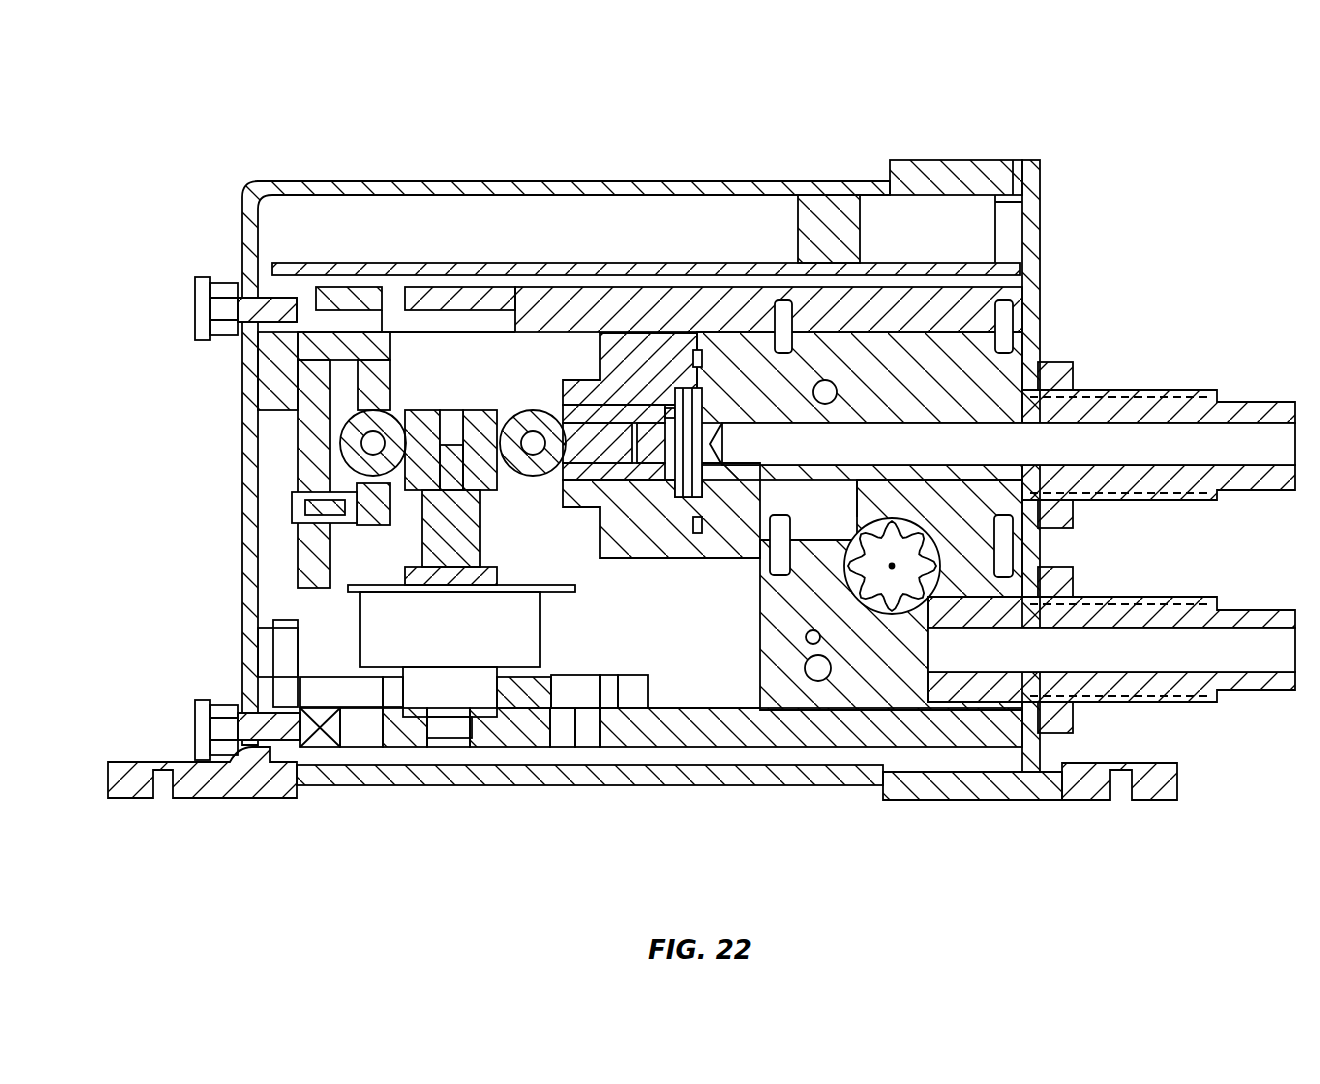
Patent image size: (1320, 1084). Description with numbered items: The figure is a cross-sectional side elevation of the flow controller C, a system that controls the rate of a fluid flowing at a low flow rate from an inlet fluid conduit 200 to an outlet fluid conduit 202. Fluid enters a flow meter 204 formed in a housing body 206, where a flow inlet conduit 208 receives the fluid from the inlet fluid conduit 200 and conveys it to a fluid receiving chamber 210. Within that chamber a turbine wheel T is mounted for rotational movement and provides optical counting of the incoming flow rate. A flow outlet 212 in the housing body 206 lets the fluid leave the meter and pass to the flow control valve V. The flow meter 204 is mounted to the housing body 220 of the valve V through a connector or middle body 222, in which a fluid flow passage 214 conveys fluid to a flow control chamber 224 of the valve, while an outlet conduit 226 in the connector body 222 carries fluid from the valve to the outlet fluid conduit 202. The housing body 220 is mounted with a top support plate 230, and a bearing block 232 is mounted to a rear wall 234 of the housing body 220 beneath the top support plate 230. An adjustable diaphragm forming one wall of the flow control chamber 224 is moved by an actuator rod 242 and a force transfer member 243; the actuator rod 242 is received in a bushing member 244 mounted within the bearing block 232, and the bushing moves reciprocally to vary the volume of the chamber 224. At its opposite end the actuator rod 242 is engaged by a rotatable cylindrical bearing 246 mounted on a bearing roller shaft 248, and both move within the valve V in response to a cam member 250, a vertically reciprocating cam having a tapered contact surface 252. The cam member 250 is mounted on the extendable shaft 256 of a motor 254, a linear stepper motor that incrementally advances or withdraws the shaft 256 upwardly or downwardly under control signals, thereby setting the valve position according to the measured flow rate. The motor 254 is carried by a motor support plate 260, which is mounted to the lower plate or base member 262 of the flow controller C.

The inlet fluid conduit 200 is at (1180, 597).
The outlet fluid conduit 202 is at (1180, 390).
The flow meter 204 is at (735, 672).
The housing body 206 is at (943, 700).
The flow inlet conduit 208 is at (1175, 650).
The fluid receiving chamber 210 is at (871, 597).
The flow outlet 212 is at (870, 487).
The fluid flow passage 214 is at (730, 490).
The housing body 220 is at (1062, 208).
The connector or middle body 222 is at (995, 375).
The flow control chamber 224 is at (683, 495).
The outlet conduit 226 is at (893, 435).
The top support plate 230 is at (292, 183).
The bearing block 232 is at (680, 393).
The rear wall 234 is at (707, 353).
The actuator rod 242 is at (600, 425).
The force transfer member 243 is at (657, 413).
The bushing member 244 is at (620, 407).
The rotatable cylindrical bearing 246 is at (512, 427).
The bearing roller shaft 248 is at (531, 437).
The cam member 250 is at (422, 422).
The tapered contact surface 252 is at (398, 478).
The motor 254 is at (380, 623).
The extendable shaft 256 is at (447, 533).
The motor support plate 260 is at (522, 700).
The lower plate or base member 262 is at (783, 727).
The flow control valve V is at (582, 348).
The turbine wheel T is at (896, 580).
The flow controller C is at (1000, 116).